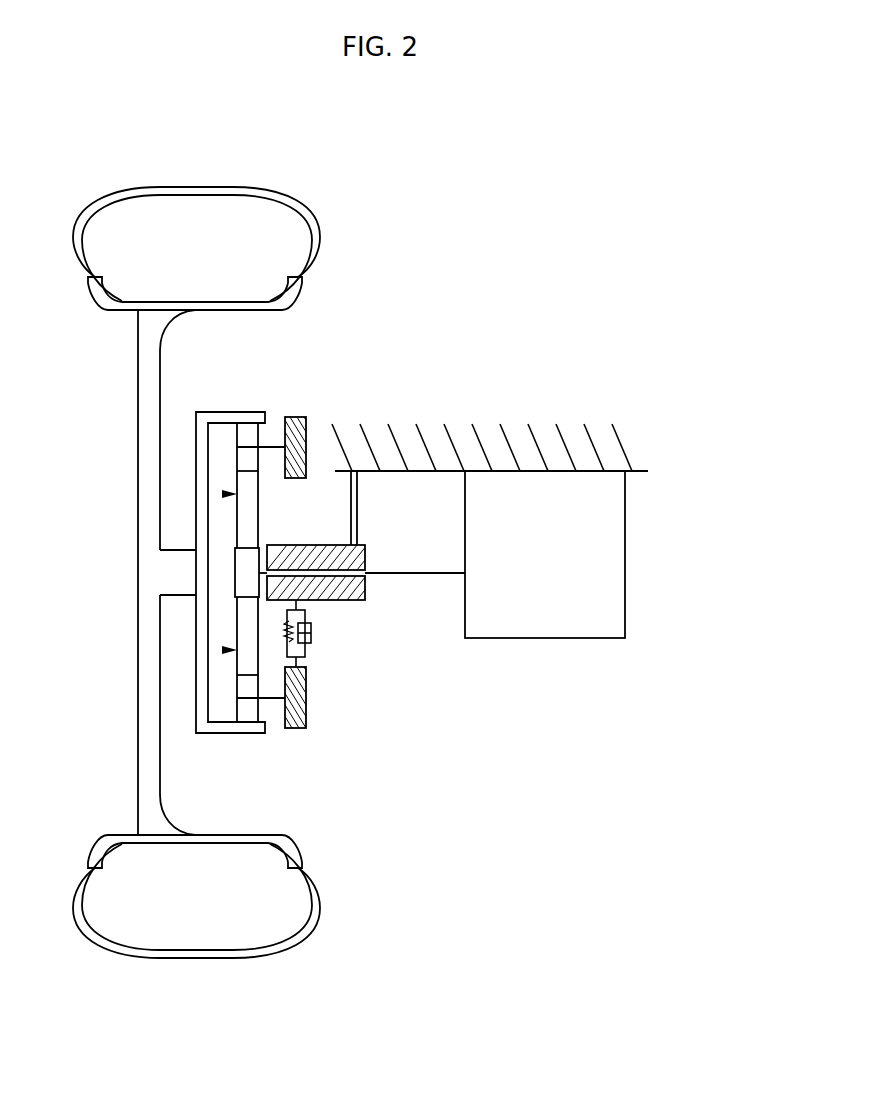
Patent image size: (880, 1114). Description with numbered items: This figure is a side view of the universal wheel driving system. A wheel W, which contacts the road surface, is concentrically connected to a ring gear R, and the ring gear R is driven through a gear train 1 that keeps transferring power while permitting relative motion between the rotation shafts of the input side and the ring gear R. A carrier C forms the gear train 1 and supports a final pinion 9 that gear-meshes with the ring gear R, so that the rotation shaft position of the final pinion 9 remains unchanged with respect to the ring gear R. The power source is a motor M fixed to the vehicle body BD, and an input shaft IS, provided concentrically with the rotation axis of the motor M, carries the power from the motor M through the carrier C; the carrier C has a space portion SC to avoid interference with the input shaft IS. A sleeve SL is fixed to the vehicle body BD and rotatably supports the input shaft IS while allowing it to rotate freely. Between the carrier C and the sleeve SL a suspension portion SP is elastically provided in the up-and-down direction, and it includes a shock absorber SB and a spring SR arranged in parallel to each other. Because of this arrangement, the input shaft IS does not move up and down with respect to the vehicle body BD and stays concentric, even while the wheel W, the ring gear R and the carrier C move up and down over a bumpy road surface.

The wheel W is at (140, 185).
The ring gear R is at (240, 412).
The final pinion 9 is at (247, 448).
The gear train 1 is at (224, 494).
The carrier C is at (296, 417).
The space portion SC is at (296, 478).
The sleeve SL is at (264, 560).
The input shaft IS is at (410, 570).
The vehicle body BD is at (530, 437).
The motor M is at (613, 562).
The suspension portion SP is at (370, 664).
The shock absorber SB is at (311, 633).
The spring SR is at (300, 660).